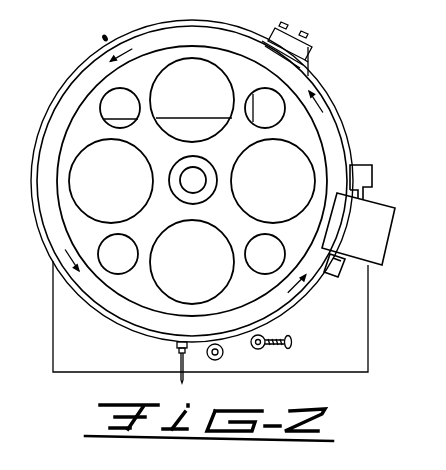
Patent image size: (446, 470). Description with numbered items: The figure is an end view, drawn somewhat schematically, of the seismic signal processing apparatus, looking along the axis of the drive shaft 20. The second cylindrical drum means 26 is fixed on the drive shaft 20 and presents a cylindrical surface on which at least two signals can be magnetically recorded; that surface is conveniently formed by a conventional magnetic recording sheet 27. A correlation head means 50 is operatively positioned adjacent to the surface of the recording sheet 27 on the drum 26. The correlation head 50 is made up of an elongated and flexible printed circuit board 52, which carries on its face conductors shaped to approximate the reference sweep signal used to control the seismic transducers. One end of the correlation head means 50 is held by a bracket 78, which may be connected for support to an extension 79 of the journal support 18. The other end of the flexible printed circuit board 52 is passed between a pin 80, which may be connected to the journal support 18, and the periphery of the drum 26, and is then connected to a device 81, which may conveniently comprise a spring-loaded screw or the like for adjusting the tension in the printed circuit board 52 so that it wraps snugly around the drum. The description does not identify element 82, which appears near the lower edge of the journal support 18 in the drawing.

The journal support 18 is at (216, 104).
The drive shaft 20 is at (202, 171).
The second cylindrical drum means 26 is at (311, 128).
The magnetic recording sheet 27 is at (346, 142).
The correlation head means 50 is at (105, 38).
The flexible printed circuit board 52 is at (53, 105).
The bracket 78 is at (278, 30).
The extension 79 is at (303, 63).
The pin 80 is at (222, 357).
The tension adjusting device 81 is at (273, 335).
The adjusting screw 82 is at (175, 344).